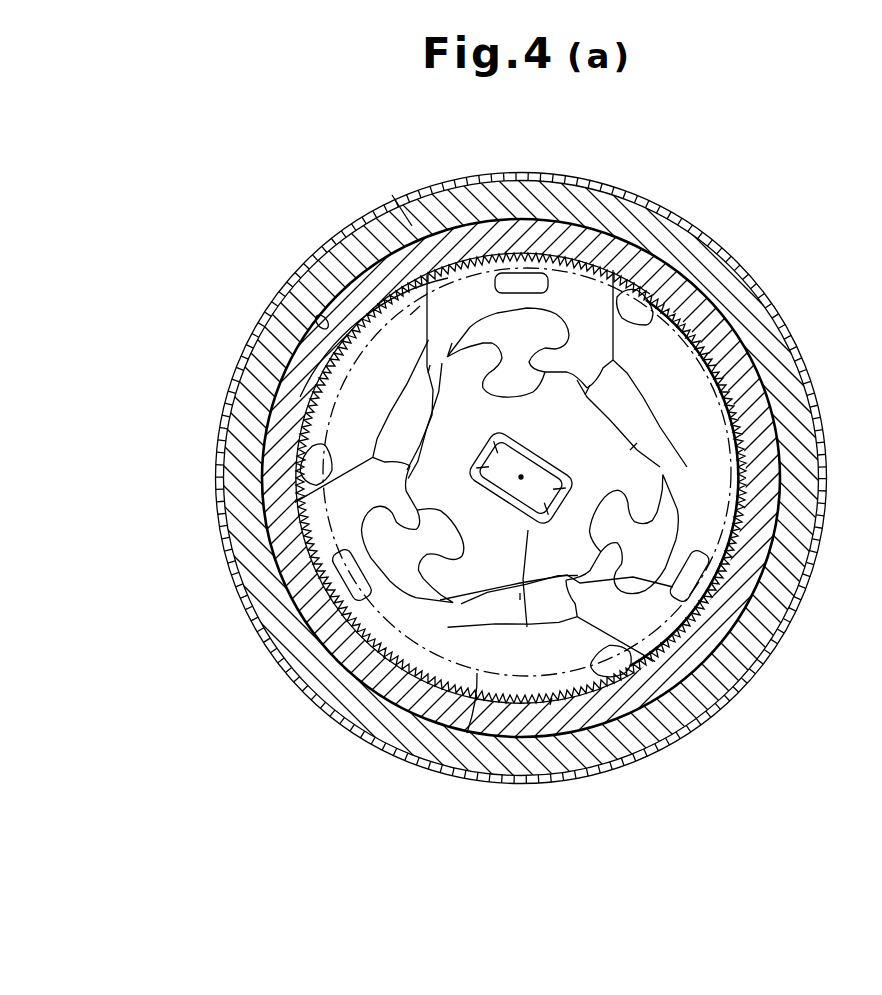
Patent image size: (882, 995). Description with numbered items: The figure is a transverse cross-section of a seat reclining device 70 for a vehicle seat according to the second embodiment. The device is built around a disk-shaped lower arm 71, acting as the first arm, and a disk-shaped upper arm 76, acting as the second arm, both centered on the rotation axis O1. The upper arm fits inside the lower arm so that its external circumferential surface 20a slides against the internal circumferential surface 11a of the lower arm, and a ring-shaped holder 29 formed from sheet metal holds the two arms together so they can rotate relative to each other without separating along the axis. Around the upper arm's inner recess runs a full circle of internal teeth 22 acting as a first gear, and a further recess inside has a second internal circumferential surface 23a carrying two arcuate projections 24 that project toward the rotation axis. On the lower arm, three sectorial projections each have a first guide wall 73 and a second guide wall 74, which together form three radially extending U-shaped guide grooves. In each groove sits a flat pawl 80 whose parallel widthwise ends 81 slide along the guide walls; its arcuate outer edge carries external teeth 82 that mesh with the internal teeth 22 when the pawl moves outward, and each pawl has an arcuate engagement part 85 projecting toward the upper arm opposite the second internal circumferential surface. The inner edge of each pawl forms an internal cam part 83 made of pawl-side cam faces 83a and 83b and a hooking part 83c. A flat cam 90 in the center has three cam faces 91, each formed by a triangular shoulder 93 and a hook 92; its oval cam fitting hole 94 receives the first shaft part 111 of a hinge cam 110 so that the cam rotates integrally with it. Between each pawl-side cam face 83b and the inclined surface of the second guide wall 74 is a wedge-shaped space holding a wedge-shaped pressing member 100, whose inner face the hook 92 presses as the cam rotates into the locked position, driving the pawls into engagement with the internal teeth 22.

The seat reclining device 70 is at (744, 196).
The lower arm 71 is at (503, 192).
The upper arm 76 is at (448, 196).
The external circumferential surface 20a is at (387, 196).
The internal circumferential surface 11a is at (300, 318).
The widthwise ends 81 is at (420, 306).
The external teeth 82 is at (632, 255).
The engagement part 85 is at (572, 222).
The hooking part 83c is at (573, 270).
The pawl 80 is at (645, 262).
The projection 24 is at (690, 292).
The holder 29 is at (775, 297).
The second guide wall 74 is at (428, 318).
The pressing member 100 is at (428, 373).
The pawl-side cam face 83a is at (448, 355).
The internal cam part 83 is at (530, 372).
The pawl-side cam face 83b is at (585, 395).
The first guide wall 73 is at (609, 353).
The cam 90 is at (637, 450).
The cam fitting hole 94 is at (483, 443).
The rotation axis O1 is at (521, 480).
The cam face 91 is at (438, 531).
The shoulder 93 is at (290, 545).
The hook 92 is at (477, 607).
The first shaft part 111 is at (520, 600).
The hinge cam 110 is at (527, 667).
The internal teeth 22 is at (467, 733).
The second internal circumferential surface 23a is at (550, 705).